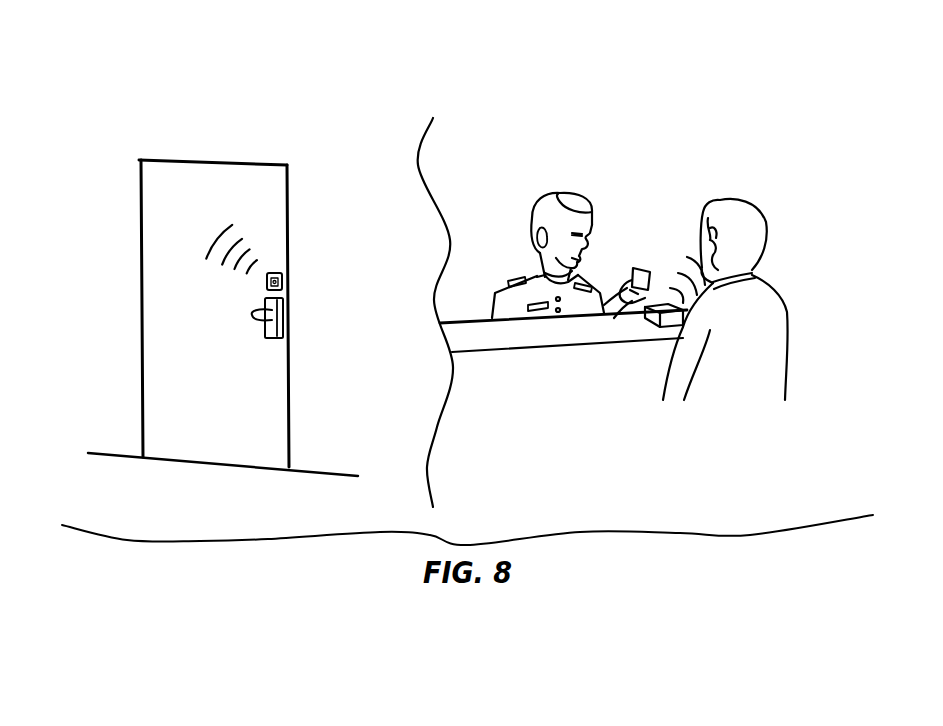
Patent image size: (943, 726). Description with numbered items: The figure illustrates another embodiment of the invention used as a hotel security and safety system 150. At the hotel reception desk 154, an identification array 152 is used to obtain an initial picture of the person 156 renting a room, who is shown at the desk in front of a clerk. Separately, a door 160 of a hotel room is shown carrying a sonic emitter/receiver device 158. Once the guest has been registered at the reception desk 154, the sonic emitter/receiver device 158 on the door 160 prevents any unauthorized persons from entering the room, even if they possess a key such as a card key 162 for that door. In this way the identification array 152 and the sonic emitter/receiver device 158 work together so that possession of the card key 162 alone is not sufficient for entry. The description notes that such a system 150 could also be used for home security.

The hotel security and safety system 150 is at (628, 135).
The identification array 152 is at (647, 320).
The hotel reception desk 154 is at (548, 328).
The person renting a room 156 is at (752, 323).
The sonic emitter/receiver device 158 is at (290, 279).
The door 160 is at (212, 313).
The card key 162 is at (643, 270).